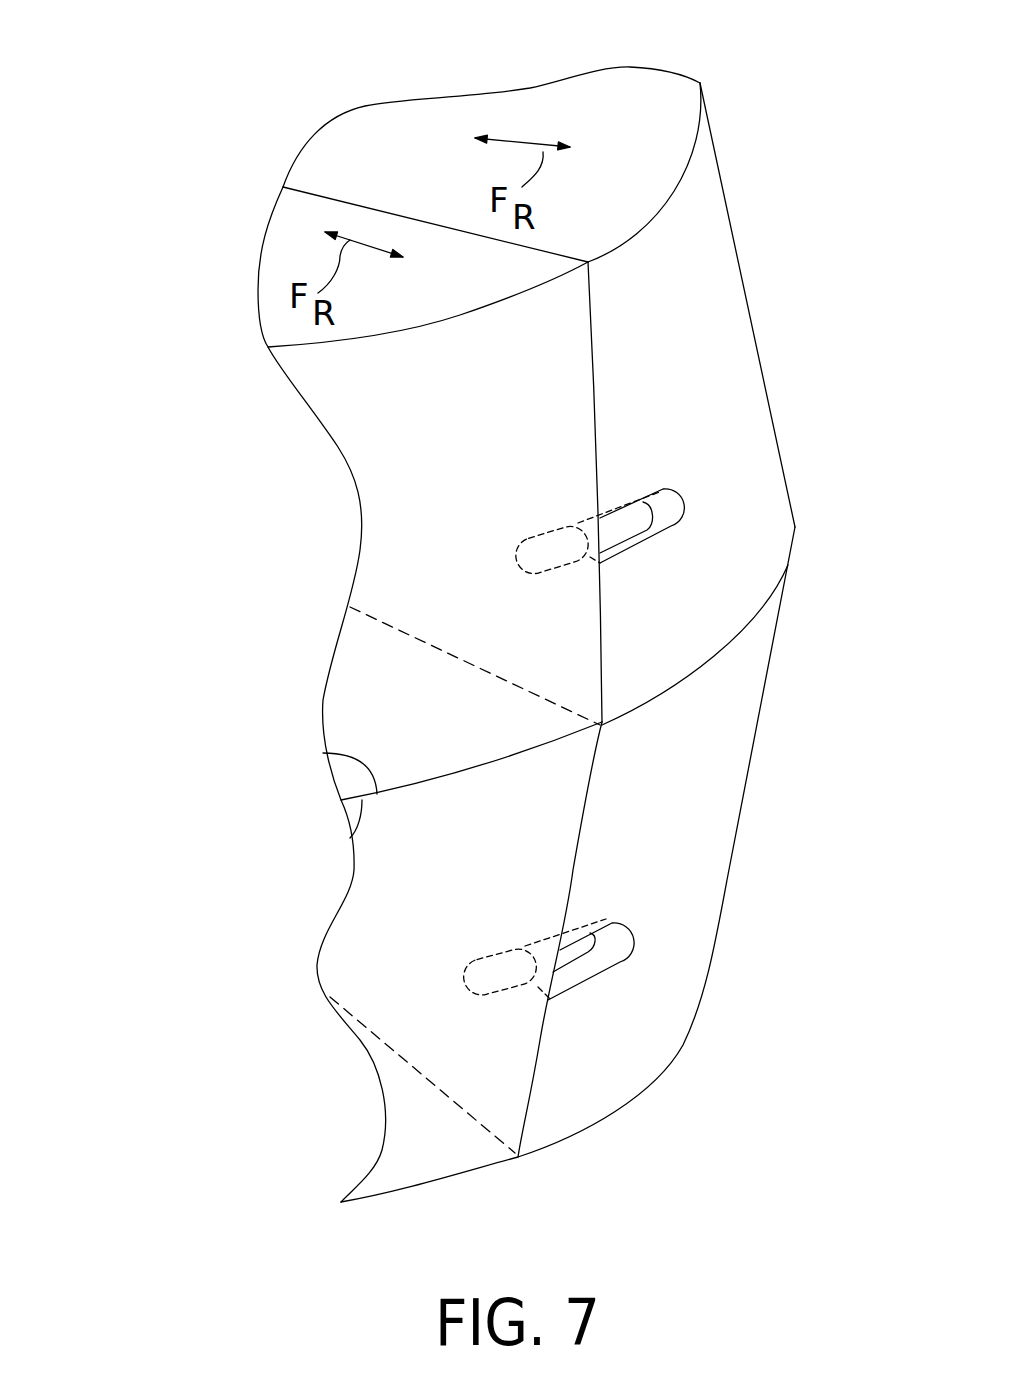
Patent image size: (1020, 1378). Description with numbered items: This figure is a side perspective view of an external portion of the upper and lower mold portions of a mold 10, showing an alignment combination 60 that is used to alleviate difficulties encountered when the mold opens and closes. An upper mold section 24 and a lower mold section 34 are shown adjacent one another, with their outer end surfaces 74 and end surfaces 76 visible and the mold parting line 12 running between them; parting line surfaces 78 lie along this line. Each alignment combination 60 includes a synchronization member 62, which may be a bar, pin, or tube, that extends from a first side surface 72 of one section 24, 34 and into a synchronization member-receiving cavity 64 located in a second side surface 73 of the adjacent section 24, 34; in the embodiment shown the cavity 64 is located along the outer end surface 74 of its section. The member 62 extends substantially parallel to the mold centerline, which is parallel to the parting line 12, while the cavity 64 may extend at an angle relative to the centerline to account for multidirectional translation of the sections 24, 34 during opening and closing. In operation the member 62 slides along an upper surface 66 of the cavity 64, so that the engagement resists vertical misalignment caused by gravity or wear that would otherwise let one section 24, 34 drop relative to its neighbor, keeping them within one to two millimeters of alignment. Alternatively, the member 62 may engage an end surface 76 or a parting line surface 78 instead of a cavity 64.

The mold 10 is at (128, 146).
The mold parting line 12 is at (432, 788).
The upper mold section 24 is at (666, 676).
The lower mold section 34 is at (583, 1119).
The alignment combination 60 is at (726, 446).
The synchronization member 62 is at (566, 526).
The synchronization member-receiving cavity 64 is at (663, 533).
The upper surface of cavity 66 is at (630, 496).
The first side surface 72 is at (582, 337).
The second side surface 73 is at (592, 316).
The outer end surface 74 is at (712, 190).
The end surface 76 is at (658, 80).
The parting line surface 78 is at (330, 755).